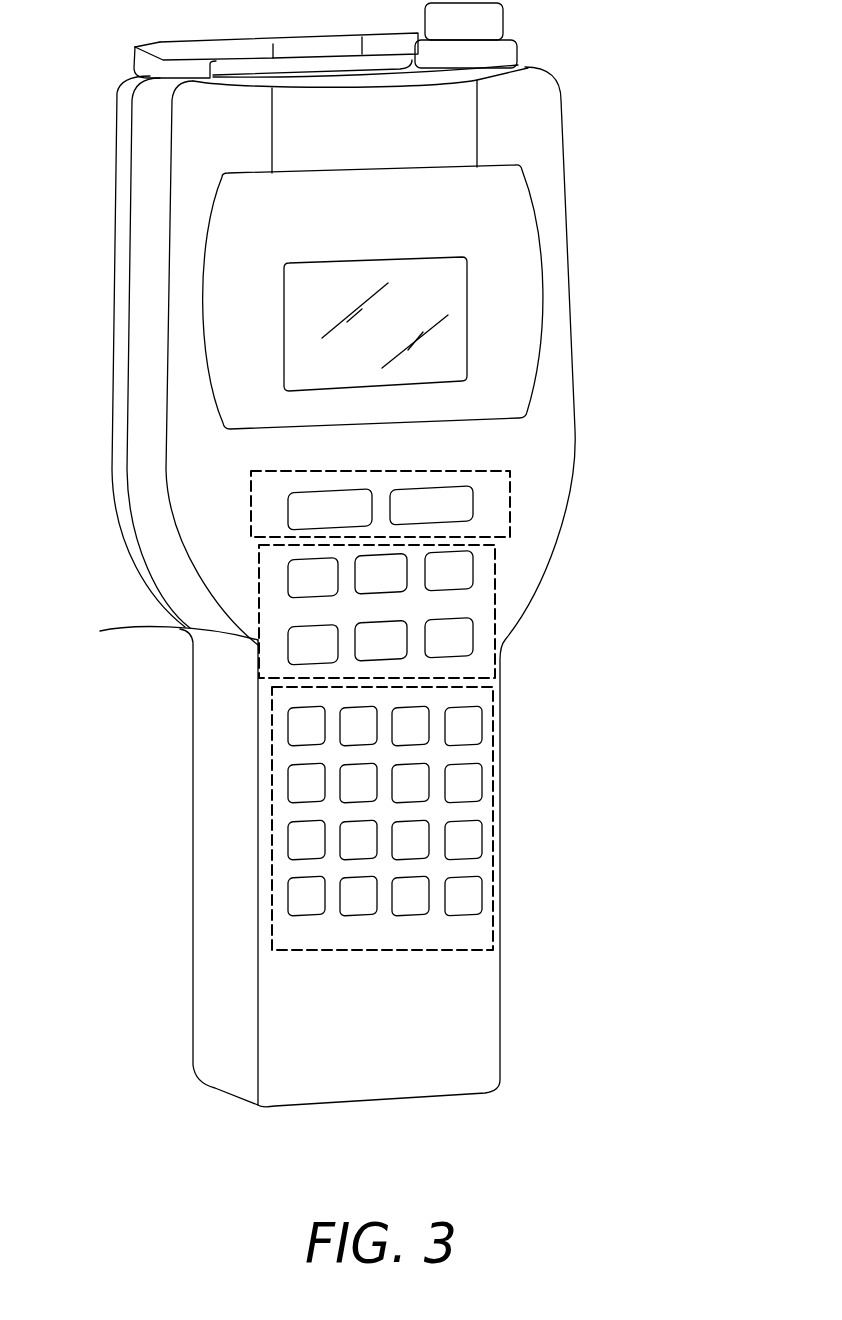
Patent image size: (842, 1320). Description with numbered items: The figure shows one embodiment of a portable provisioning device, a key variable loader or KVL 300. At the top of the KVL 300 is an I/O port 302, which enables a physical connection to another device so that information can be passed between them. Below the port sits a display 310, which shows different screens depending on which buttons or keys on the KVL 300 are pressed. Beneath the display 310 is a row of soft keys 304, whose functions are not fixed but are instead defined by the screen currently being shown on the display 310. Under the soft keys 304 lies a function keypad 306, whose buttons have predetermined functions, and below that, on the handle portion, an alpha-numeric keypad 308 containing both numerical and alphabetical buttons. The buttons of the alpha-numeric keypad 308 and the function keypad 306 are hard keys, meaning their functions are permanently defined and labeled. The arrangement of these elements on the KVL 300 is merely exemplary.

The KVL 300 is at (590, 657).
The I/O port 302 is at (503, 18).
The soft keys 304 is at (250, 500).
The function keypad 306 is at (101, 630).
The alpha-numeric keypad 308 is at (271, 860).
The display 310 is at (453, 320).